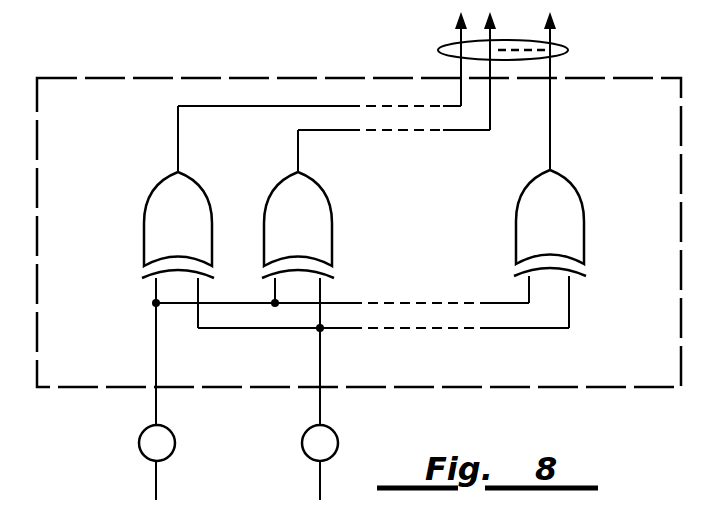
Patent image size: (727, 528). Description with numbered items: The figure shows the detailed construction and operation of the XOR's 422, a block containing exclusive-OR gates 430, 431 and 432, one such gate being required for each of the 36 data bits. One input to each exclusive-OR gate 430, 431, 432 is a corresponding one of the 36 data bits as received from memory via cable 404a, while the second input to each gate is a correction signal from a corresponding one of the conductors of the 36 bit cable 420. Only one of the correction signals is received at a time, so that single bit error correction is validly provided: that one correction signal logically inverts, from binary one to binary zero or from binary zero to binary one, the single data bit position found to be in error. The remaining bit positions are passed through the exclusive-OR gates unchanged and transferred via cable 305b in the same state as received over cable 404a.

The cable 305b is at (568, 49).
The exclusive-OR gate 430 is at (203, 192).
The exclusive-OR gate 431 is at (323, 192).
The exclusive-OR gate 432 is at (578, 192).
The XOR's 422 is at (627, 389).
The data bits 36 is at (238, 443).
The 36 bit cable 420 is at (156, 474).
The cable 404a is at (320, 474).